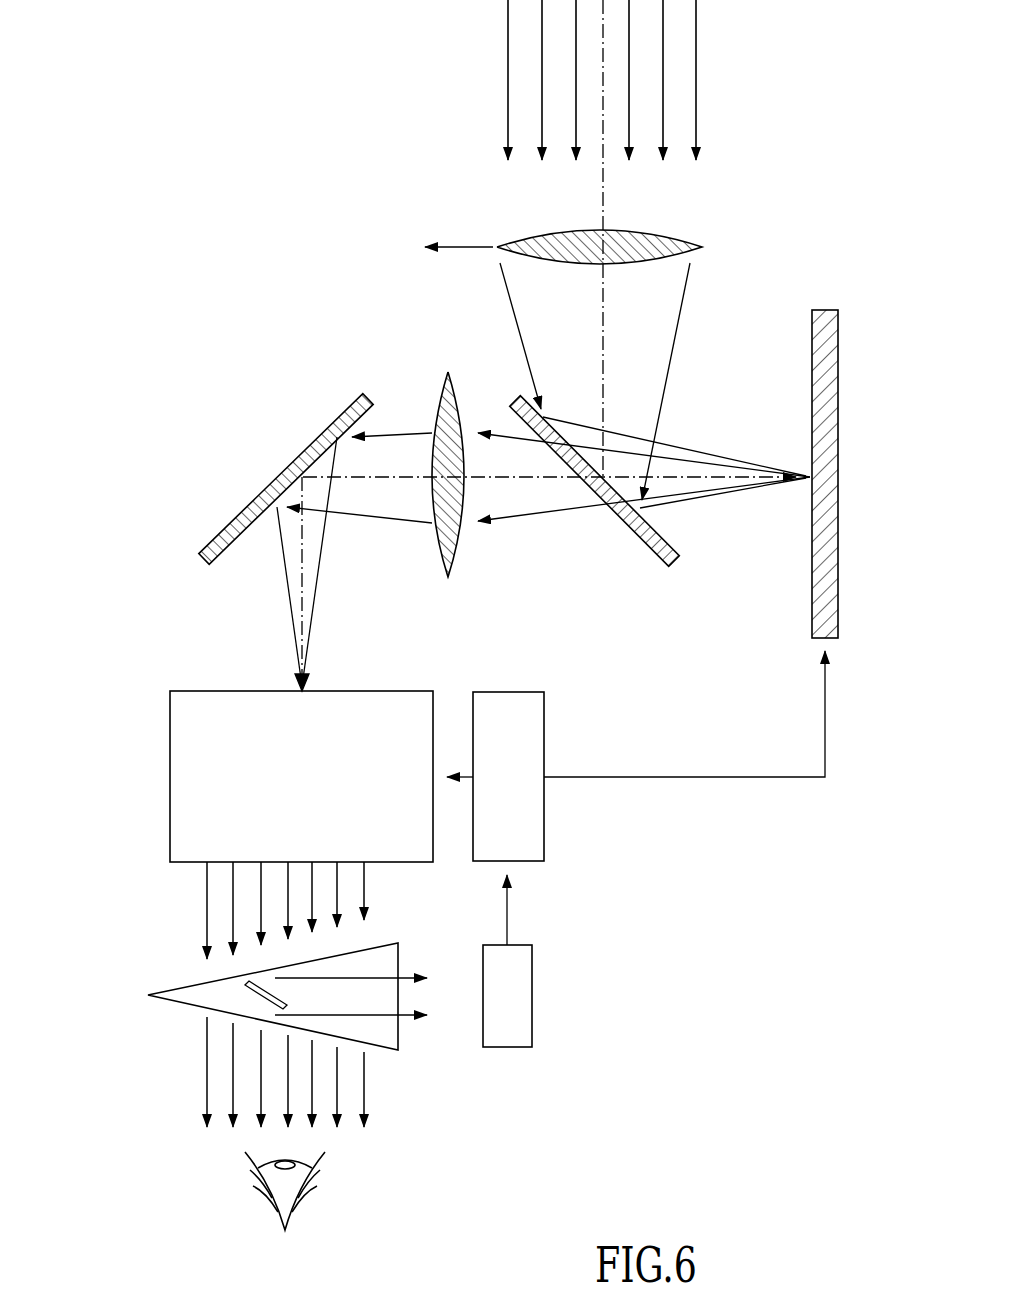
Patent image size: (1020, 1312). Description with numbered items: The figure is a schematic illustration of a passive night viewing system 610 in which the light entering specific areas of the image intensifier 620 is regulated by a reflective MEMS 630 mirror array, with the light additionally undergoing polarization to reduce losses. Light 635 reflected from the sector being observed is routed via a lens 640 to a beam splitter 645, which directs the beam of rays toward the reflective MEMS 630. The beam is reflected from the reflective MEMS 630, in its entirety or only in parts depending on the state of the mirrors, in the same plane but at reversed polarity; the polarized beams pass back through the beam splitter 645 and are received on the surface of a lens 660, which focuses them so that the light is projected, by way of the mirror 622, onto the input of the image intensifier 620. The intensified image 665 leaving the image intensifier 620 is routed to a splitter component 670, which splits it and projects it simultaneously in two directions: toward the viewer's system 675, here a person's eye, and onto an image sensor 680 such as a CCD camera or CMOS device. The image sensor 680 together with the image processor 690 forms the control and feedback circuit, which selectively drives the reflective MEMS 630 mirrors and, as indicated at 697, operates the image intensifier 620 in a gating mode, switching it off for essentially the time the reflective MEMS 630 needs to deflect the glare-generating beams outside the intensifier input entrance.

The passive night viewing system 610 is at (190, 137).
The image intensifier 620 is at (170, 743).
The fold mirror 622 is at (232, 517).
The reflective MEMS 630 is at (838, 368).
The reflected light 635 is at (508, 57).
The lens 640 is at (452, 243).
The beam splitter 645 is at (678, 560).
The lens 660 is at (448, 372).
The intensified image 665 is at (207, 900).
The splitter component 670 is at (230, 995).
The viewer's system 675 is at (190, 1183).
The image sensor 680 is at (532, 995).
The image processor 690 is at (544, 810).
The gating-mode operation of the image intensifier 697 is at (458, 775).